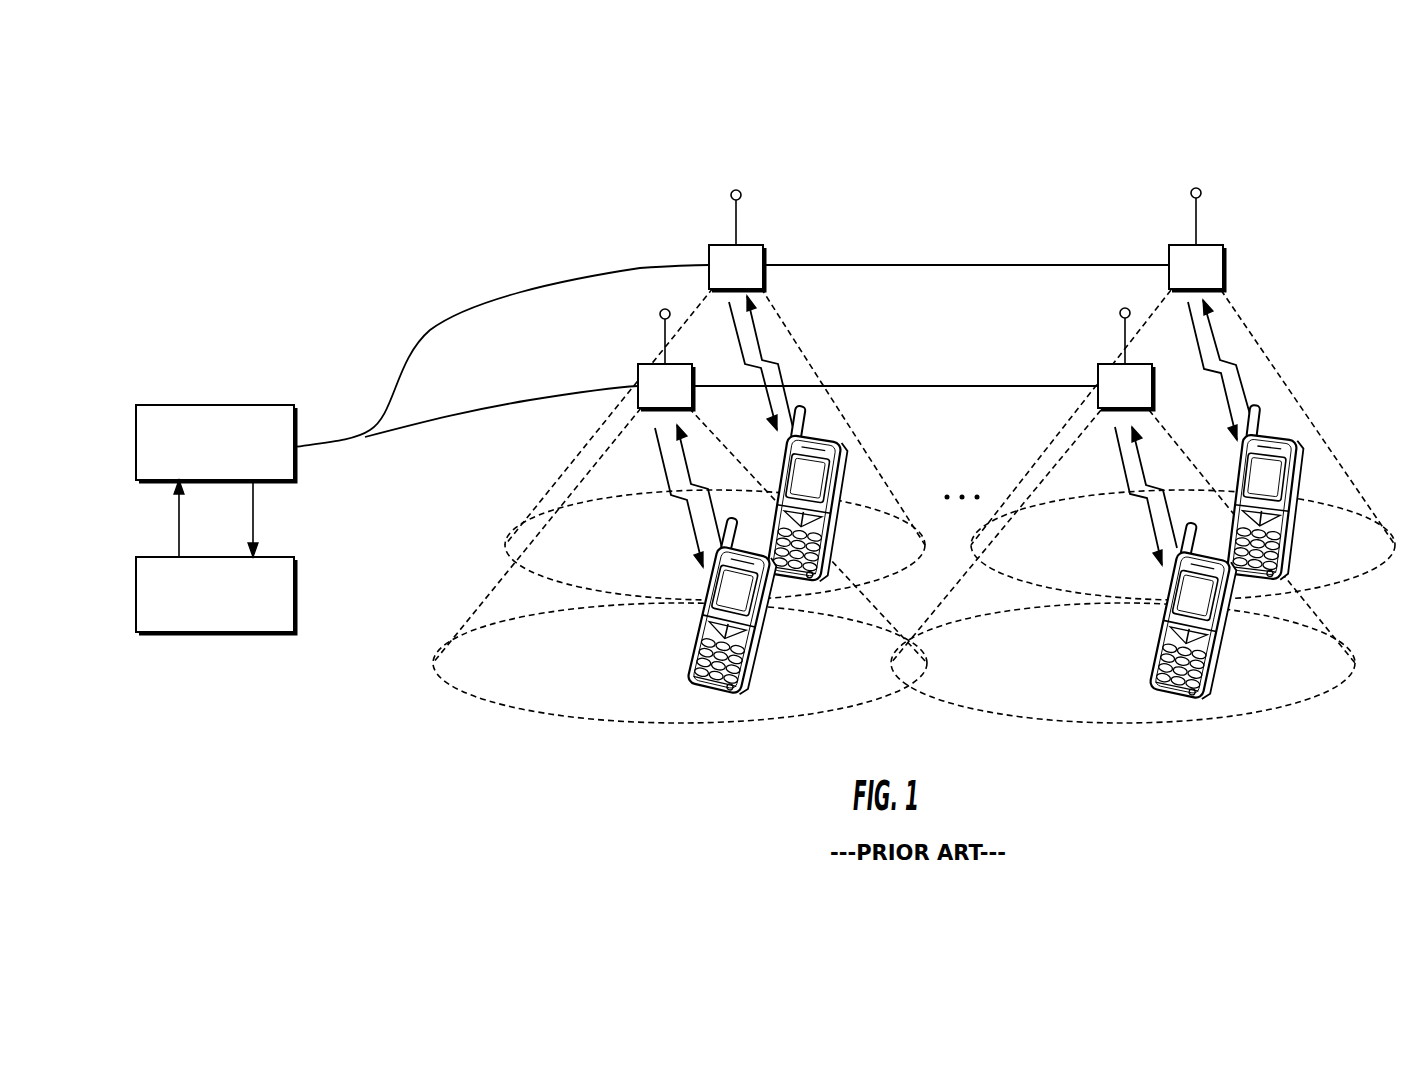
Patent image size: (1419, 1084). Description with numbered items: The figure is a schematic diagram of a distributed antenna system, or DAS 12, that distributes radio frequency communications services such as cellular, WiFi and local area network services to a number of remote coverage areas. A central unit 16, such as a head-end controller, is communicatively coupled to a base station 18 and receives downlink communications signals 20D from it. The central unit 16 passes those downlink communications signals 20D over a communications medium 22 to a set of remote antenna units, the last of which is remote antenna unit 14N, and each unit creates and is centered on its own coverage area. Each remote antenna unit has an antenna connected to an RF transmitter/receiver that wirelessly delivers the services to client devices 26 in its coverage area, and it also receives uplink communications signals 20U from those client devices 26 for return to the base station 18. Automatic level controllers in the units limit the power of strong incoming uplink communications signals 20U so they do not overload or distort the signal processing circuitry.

The distributed antenna system (DAS) 12 is at (887, 214).
The central unit 16 is at (203, 455).
The base station 18 is at (203, 607).
The downlink communications signals 20D is at (178, 530).
The uplink communications signals 20U is at (254, 530).
The communications medium 22 is at (523, 283).
The remote antenna unit 14N is at (638, 404).
The client devices 26 is at (847, 470).